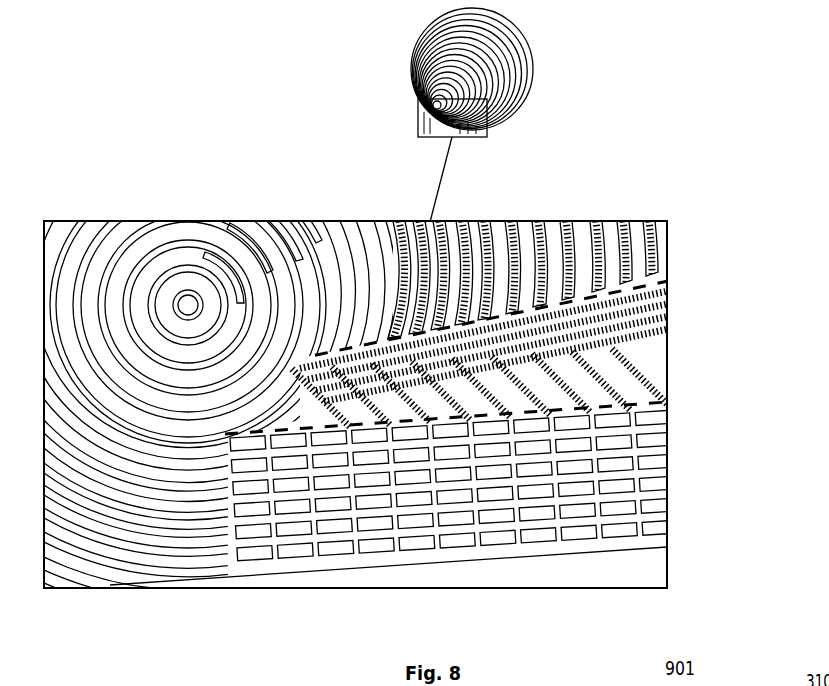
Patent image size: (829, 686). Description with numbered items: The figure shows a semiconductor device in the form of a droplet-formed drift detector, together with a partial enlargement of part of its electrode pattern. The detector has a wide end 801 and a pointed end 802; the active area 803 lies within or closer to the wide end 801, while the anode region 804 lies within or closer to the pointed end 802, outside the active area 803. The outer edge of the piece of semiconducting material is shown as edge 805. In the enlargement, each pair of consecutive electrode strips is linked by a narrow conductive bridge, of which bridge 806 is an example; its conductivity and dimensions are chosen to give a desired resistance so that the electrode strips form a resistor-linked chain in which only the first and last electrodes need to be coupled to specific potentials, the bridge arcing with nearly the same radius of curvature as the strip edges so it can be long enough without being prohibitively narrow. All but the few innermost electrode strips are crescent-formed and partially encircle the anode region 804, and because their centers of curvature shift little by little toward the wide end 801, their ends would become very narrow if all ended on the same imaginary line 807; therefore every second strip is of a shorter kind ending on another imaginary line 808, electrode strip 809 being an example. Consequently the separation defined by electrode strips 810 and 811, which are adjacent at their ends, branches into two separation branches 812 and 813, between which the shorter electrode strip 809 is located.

The wide end 801 is at (481, 65).
The pointed end 802 is at (404, 132).
The active area 803 is at (483, 57).
The anode region 804 is at (420, 97).
The edge of the piece of semiconducting material 805 is at (497, 563).
The conductive bridge 806 is at (226, 250).
The imaginary line 807 is at (621, 398).
The another imaginary line 808 is at (648, 283).
The electrode strip of the shorter kind 809 is at (456, 224).
The electrode strip 810 is at (428, 224).
The electrode strip 811 is at (493, 224).
The separation branch 812 is at (435, 224).
The separation branch 813 is at (470, 224).